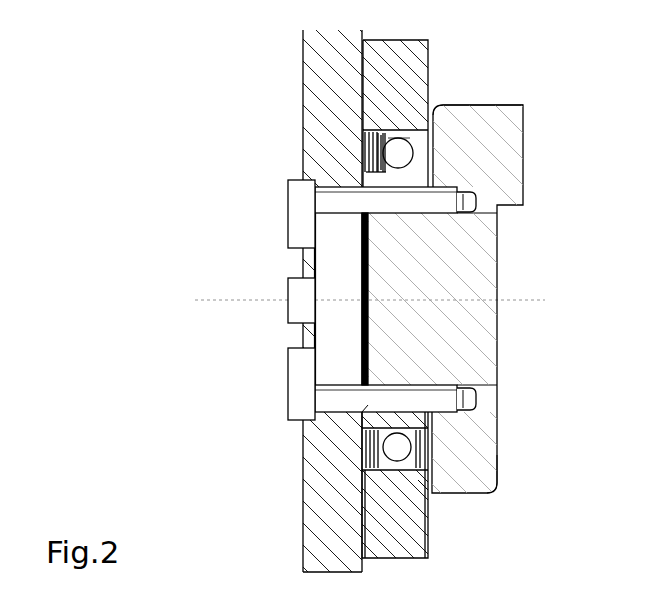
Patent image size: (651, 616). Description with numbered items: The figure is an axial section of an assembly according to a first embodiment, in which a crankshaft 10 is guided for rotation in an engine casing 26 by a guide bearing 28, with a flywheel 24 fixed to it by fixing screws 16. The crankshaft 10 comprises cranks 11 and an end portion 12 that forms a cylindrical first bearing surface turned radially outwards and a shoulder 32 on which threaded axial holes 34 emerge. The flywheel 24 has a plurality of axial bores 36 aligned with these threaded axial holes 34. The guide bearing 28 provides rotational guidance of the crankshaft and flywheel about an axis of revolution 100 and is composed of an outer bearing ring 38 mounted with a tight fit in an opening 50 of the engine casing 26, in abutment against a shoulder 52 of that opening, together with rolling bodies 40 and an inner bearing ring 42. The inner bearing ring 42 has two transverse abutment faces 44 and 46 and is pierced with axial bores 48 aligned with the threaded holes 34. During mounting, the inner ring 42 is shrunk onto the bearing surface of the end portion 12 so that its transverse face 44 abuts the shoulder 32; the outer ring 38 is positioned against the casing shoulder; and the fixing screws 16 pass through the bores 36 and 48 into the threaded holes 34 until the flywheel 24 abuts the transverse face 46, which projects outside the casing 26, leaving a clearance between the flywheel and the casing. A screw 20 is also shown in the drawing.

The crankshaft 10 is at (497, 262).
The cranks 11 is at (490, 135).
The end portion 12 is at (362, 345).
The fixing screws 16 is at (315, 213).
The bolt 20 is at (388, 376).
The flywheel 24 is at (305, 525).
The engine casing 26 is at (405, 50).
The guide bearing 28 is at (394, 514).
The shoulder 32 is at (428, 492).
The threaded axial holes 34 is at (492, 216).
The axial bores 36 is at (300, 180).
The outer bearing ring 38 is at (380, 135).
The rolling bodies 40 is at (425, 135).
The inner bearing ring 42 is at (375, 165).
The transverse abutment face 44 is at (500, 458).
The transverse abutment face 46 is at (362, 427).
The axial bores 48 is at (365, 224).
The opening 50 is at (390, 140).
The shoulder 52 is at (402, 149).
The axis of revolution 100 is at (545, 300).